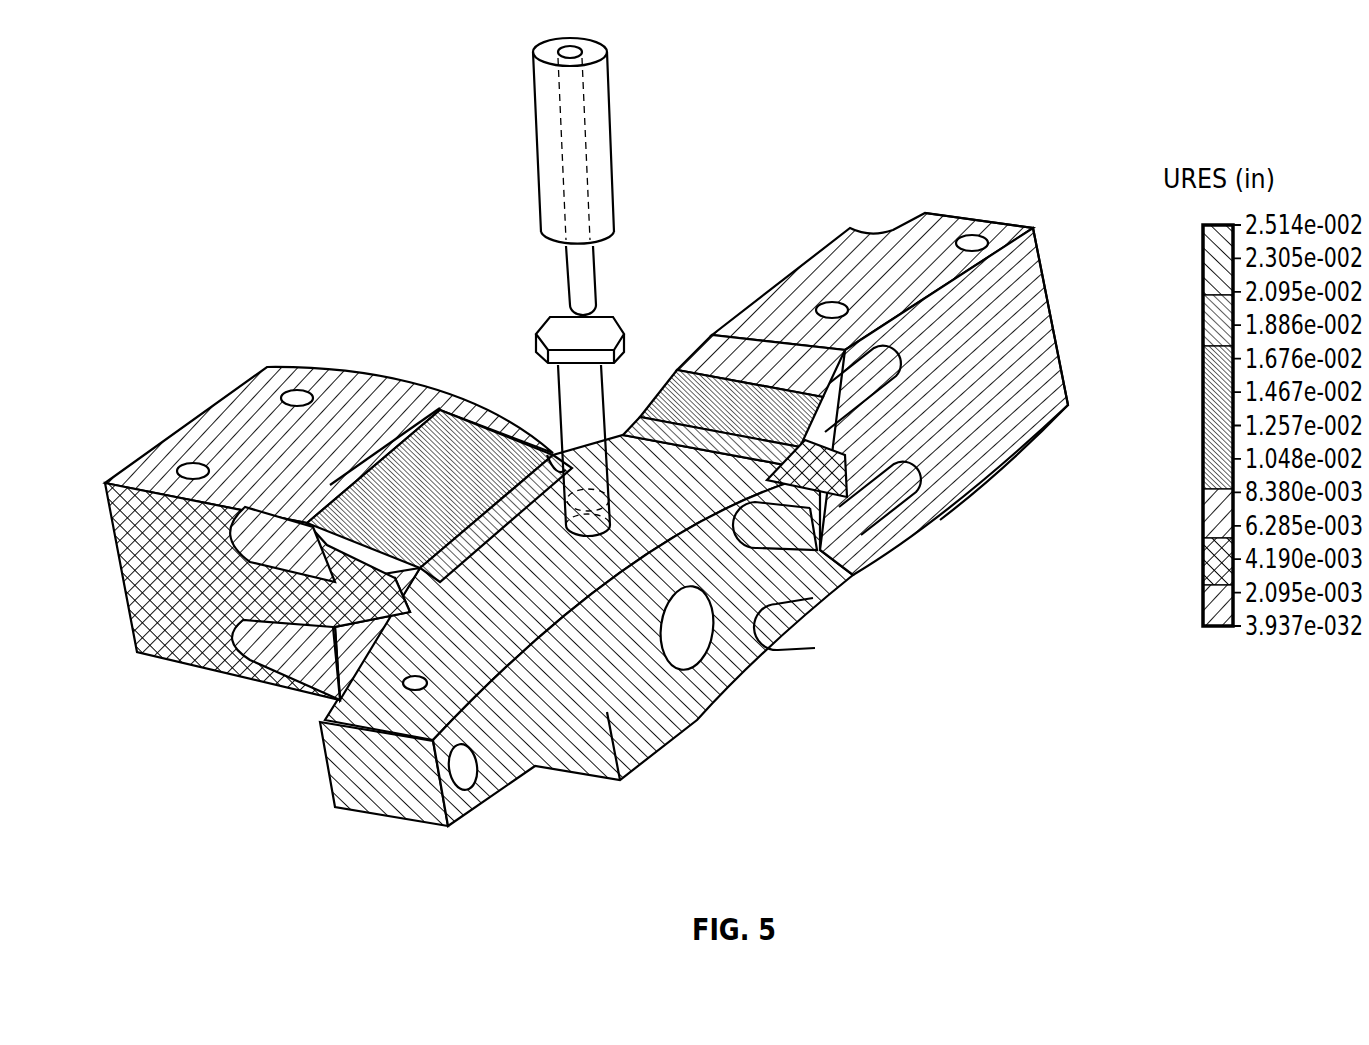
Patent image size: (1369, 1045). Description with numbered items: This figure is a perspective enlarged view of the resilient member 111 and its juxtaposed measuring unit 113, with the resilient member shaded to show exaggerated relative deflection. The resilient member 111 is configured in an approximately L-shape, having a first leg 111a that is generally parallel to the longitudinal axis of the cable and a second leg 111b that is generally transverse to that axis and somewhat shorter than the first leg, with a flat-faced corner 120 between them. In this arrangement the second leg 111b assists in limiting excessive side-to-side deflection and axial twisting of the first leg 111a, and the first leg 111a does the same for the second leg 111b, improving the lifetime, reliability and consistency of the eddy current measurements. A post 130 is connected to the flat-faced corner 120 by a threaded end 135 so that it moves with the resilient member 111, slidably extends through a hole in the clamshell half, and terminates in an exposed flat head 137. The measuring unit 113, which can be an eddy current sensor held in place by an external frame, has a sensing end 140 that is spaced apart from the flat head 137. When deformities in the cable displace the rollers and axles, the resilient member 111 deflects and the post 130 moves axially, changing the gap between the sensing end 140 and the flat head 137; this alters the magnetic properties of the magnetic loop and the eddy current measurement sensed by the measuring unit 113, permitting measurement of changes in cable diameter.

The resilient member 111 is at (791, 270).
The first leg 111a is at (984, 215).
The second leg 111b is at (212, 410).
The measuring unit 113 is at (598, 135).
The flat-faced corner 120 is at (638, 637).
The post 130 is at (566, 374).
The threaded end 135 is at (560, 535).
The flat head 137 is at (547, 322).
The sensing end 140 is at (593, 303).